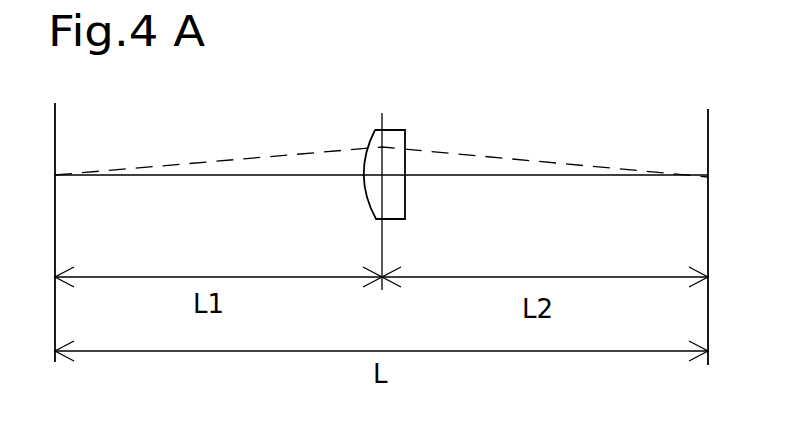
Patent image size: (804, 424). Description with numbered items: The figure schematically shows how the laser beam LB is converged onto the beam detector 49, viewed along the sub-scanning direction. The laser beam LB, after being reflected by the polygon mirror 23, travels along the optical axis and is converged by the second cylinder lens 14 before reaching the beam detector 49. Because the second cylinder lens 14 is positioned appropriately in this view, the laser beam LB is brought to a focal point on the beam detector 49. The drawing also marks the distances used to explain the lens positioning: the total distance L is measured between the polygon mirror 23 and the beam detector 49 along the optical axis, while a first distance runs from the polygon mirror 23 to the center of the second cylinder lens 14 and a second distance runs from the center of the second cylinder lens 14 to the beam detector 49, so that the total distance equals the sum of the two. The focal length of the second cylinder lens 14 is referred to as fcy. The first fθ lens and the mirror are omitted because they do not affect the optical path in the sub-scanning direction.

The polygon mirror 23 is at (57, 117).
The second cylinder lens 14 is at (395, 130).
The beam detector 49 is at (708, 124).